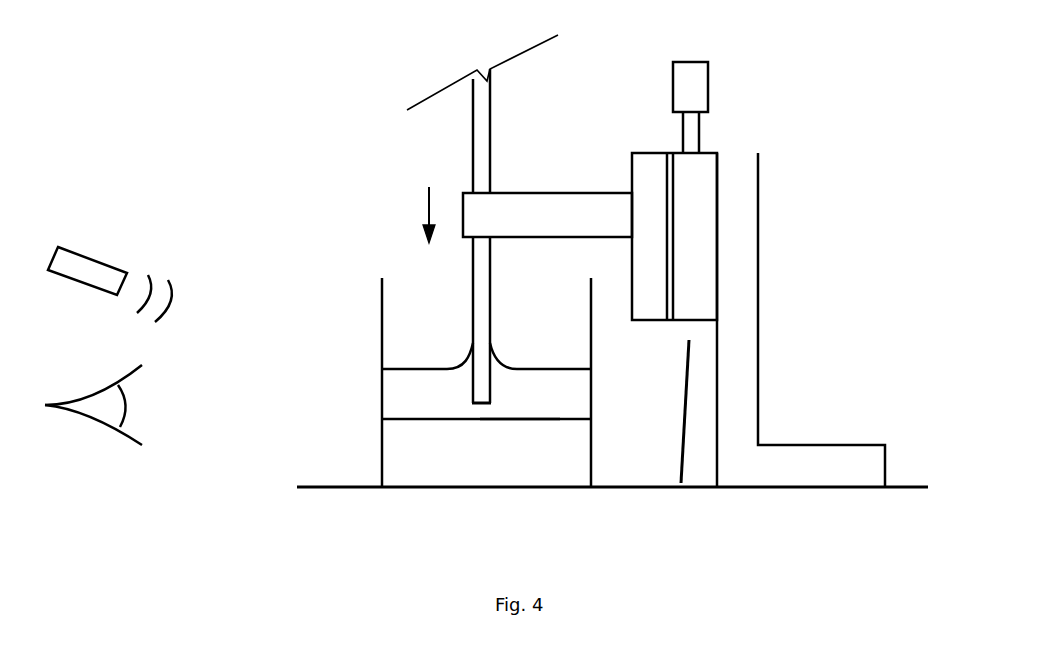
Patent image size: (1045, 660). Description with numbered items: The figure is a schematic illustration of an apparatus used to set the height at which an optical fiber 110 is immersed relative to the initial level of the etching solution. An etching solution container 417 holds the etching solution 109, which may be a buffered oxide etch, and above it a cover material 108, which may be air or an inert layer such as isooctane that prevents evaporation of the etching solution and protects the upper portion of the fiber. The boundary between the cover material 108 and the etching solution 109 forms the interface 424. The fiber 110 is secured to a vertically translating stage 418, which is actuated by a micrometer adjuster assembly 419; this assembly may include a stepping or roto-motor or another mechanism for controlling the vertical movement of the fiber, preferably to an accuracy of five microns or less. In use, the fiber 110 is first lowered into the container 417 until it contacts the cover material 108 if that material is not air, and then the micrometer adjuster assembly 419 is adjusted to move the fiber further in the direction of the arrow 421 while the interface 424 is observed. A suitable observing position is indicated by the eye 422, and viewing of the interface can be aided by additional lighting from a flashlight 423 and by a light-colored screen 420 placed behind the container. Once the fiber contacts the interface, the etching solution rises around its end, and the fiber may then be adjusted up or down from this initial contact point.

The cover material 108 is at (435, 405).
The etching solution 109 is at (440, 467).
The optical fiber 110 is at (489, 123).
The etching solution container 417 is at (380, 342).
The vertically translating stage 418 is at (648, 153).
The micrometer adjuster assembly 419 is at (708, 98).
The light-colored screen 420 is at (678, 437).
The arrow 421 is at (423, 203).
The eye 422 is at (92, 415).
The flashlight 423 is at (106, 260).
The interface 424 is at (520, 419).